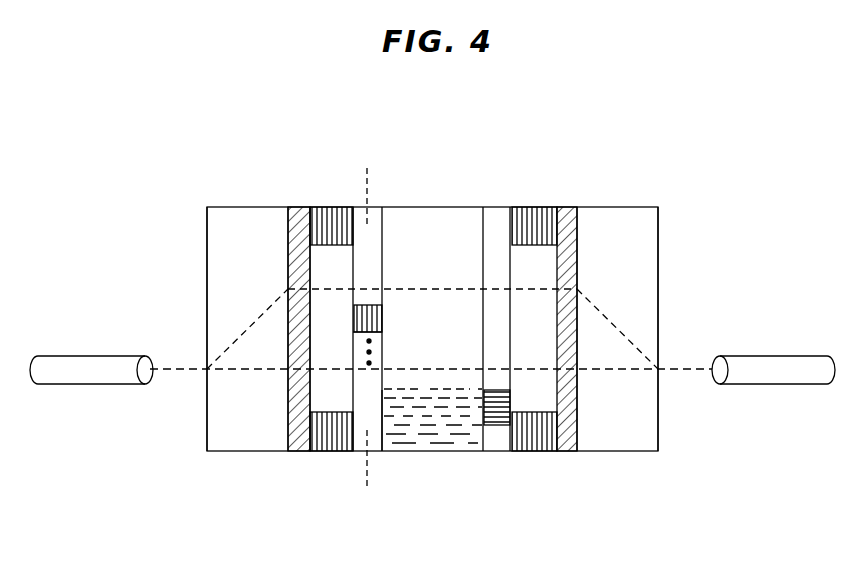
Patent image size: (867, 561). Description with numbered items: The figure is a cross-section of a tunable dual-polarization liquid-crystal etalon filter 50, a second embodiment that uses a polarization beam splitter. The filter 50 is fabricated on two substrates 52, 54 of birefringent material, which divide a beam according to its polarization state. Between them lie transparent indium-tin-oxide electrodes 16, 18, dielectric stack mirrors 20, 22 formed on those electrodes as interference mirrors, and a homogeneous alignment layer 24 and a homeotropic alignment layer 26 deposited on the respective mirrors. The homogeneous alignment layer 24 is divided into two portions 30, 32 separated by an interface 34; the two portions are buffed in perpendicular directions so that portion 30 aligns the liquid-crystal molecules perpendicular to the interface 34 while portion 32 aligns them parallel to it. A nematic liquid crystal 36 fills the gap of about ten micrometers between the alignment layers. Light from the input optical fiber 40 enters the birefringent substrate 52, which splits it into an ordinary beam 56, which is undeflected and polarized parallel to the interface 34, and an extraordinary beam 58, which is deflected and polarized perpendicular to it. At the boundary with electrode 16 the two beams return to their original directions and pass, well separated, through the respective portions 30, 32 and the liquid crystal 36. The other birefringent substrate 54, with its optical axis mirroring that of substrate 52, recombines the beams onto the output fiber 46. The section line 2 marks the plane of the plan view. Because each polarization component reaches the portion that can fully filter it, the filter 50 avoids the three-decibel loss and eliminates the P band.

The section line 2- 2 is at (367, 168).
The transparent indium-tin-oxide electrode 16 is at (292, 217).
The transparent indium-tin-oxide electrode 18 is at (572, 216).
The dielectric stack mirror 20 is at (328, 222).
The dielectric stack mirror 22 is at (538, 216).
The homogeneous alignment layer 24 is at (374, 180).
The homeotropic alignment layer 26 is at (490, 218).
The portion of homogeneous alignment layer 30 is at (374, 218).
The portion of homogeneous alignment layer 32 is at (383, 452).
The interface 34 is at (383, 332).
The nematic liquid crystal 36 is at (440, 229).
The input optical fiber 40 is at (108, 356).
The output fiber 46 is at (744, 356).
The tunable dual-polarization liquid-crystal etalon filter 50 is at (626, 488).
The birefringent substrate 52 is at (218, 218).
The birefringent substrate 54 is at (640, 216).
The ordinary beam 56 is at (228, 372).
The extraordinary beam 58 is at (250, 322).